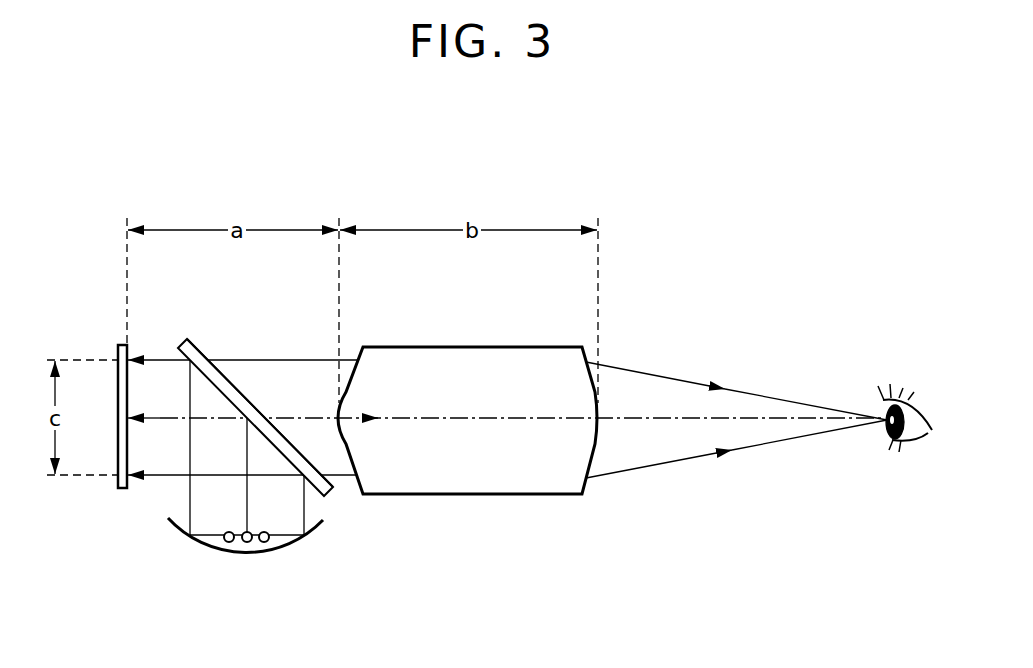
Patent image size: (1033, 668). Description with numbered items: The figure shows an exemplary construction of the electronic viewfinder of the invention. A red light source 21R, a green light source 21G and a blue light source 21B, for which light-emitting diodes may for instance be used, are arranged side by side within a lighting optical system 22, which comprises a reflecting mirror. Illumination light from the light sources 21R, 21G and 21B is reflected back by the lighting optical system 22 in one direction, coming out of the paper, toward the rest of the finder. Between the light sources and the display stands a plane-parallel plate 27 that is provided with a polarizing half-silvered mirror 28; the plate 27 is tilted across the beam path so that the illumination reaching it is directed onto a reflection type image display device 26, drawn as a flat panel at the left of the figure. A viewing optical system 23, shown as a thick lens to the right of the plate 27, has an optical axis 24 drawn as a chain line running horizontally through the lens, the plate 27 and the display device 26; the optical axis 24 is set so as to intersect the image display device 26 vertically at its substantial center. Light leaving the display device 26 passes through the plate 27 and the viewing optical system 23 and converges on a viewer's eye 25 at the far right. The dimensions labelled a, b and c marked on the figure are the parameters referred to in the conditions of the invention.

The red light source 21R is at (225, 542).
The green light source 21G is at (247, 542).
The blue light source 21B is at (265, 542).
The lighting optical system 22 is at (317, 530).
The viewing optical system 23 is at (572, 485).
The optical axis of the viewing optical system 24 is at (468, 420).
The viewer's eye 25 is at (910, 442).
The reflection type image display device 26 is at (120, 458).
The plane-parallel plate 27 is at (230, 390).
The polarizing half-silvered mirror 28 is at (317, 488).